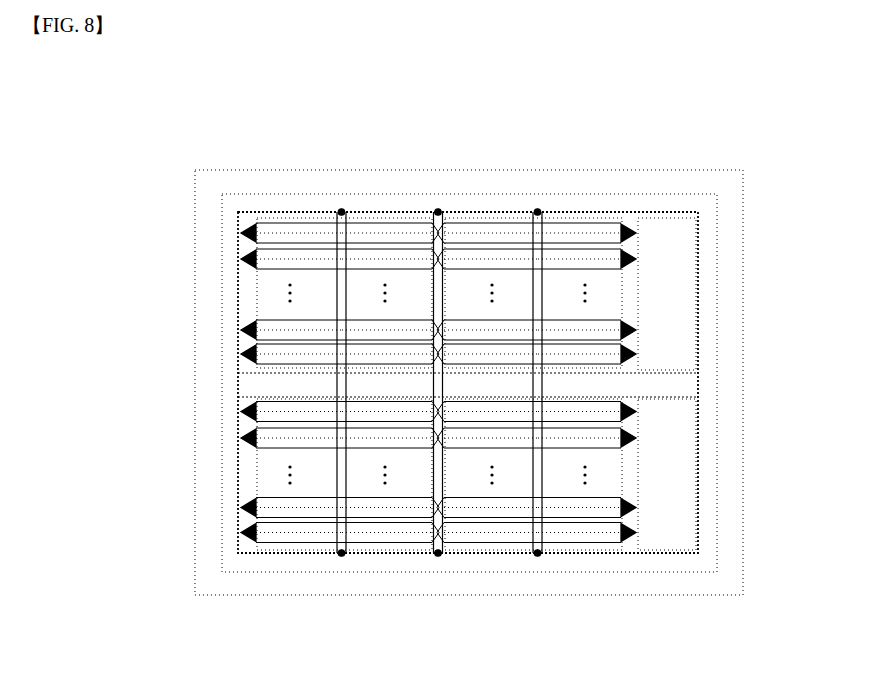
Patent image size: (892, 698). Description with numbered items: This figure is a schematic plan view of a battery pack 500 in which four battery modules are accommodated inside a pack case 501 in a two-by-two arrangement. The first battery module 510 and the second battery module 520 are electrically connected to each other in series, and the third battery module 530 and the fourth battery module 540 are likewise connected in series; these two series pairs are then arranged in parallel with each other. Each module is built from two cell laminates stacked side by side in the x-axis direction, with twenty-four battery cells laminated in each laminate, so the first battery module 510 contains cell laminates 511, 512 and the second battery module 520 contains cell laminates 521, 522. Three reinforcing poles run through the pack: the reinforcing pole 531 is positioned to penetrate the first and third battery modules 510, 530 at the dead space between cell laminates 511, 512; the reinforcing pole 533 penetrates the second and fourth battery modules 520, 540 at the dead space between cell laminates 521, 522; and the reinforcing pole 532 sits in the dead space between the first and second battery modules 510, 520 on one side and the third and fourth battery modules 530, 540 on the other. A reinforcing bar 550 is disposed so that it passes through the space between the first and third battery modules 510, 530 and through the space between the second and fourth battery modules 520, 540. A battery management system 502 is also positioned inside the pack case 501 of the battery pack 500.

The battery pack 500 is at (141, 103).
The pack case 501 is at (460, 170).
The battery management system 502 is at (678, 305).
The first battery module 510 is at (285, 512).
The cell laminate 511 is at (292, 545).
The cell laminate 512 is at (378, 545).
The second battery module 520 is at (619, 514).
The cell laminate 521 is at (507, 545).
The cell laminate 522 is at (557, 545).
The third battery module 530 is at (243, 283).
The reinforcing pole 531 is at (342, 556).
The reinforcing pole 532 is at (436, 556).
The reinforcing pole 533 is at (538, 556).
The fourth battery module 540 is at (633, 293).
The reinforcing bar 550 is at (685, 387).